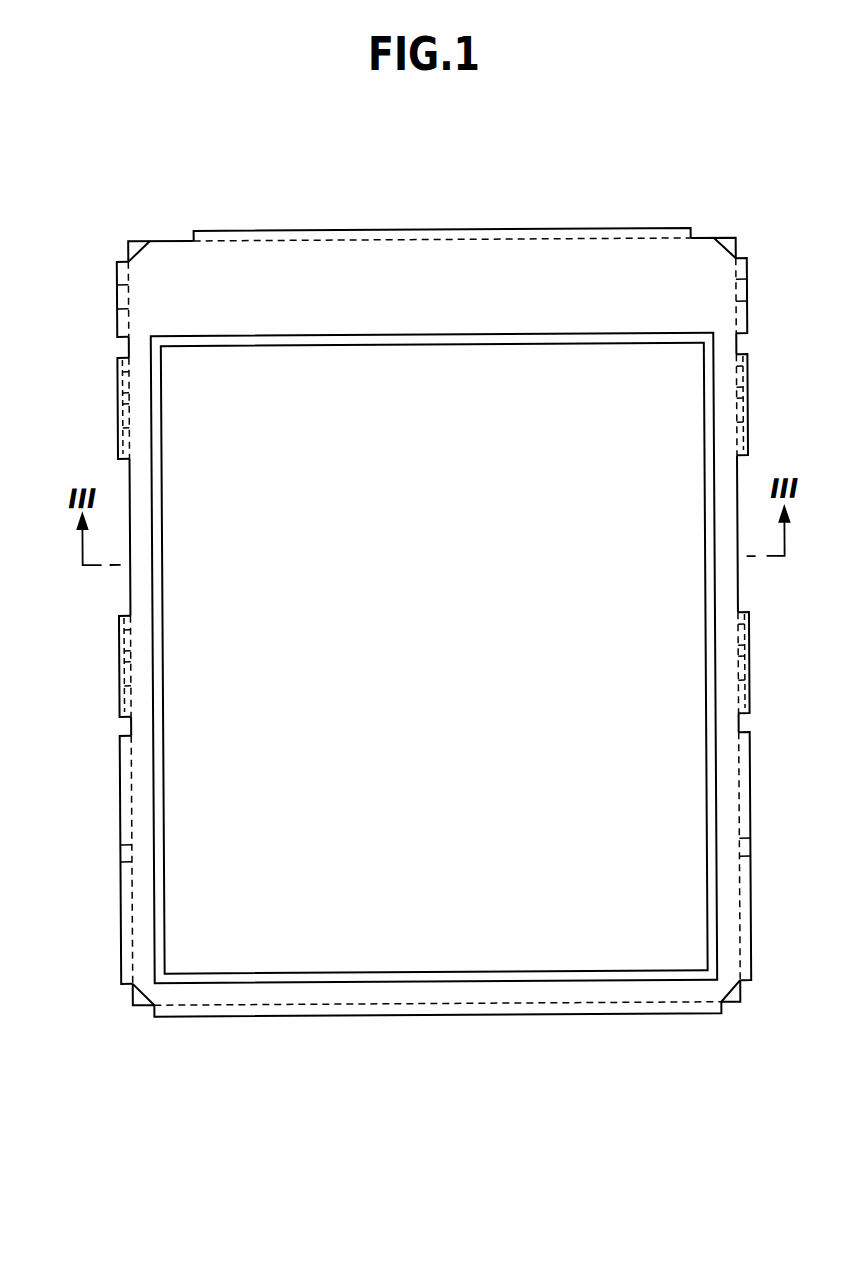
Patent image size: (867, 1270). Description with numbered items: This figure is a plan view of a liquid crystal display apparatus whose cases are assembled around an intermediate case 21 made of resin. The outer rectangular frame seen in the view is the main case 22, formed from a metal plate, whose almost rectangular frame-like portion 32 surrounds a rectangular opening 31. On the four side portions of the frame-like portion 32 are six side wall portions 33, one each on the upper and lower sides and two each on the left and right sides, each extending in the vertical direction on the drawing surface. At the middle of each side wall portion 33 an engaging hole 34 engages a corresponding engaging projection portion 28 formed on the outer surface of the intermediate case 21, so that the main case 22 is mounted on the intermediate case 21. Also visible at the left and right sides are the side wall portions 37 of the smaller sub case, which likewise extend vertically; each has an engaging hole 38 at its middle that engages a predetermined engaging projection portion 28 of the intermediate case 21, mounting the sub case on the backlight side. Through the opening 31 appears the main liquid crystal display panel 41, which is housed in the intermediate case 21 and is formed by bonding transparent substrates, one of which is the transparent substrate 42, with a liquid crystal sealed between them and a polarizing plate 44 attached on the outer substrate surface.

The intermediate case 21 is at (732, 228).
The main case 22 is at (257, 222).
The engaging projection portion 28 is at (115, 290).
The rectangular opening 31 is at (419, 981).
The frame-like portion 32 is at (510, 991).
The side wall portion 33 is at (120, 273).
The engaging hole 34 is at (115, 308).
The side wall portion 37 is at (122, 370).
The engaging hole 38 is at (115, 421).
The main liquid crystal display panel 41 is at (587, 950).
The transparent substrate 42 is at (678, 977).
The polarizing plate 44 is at (638, 955).